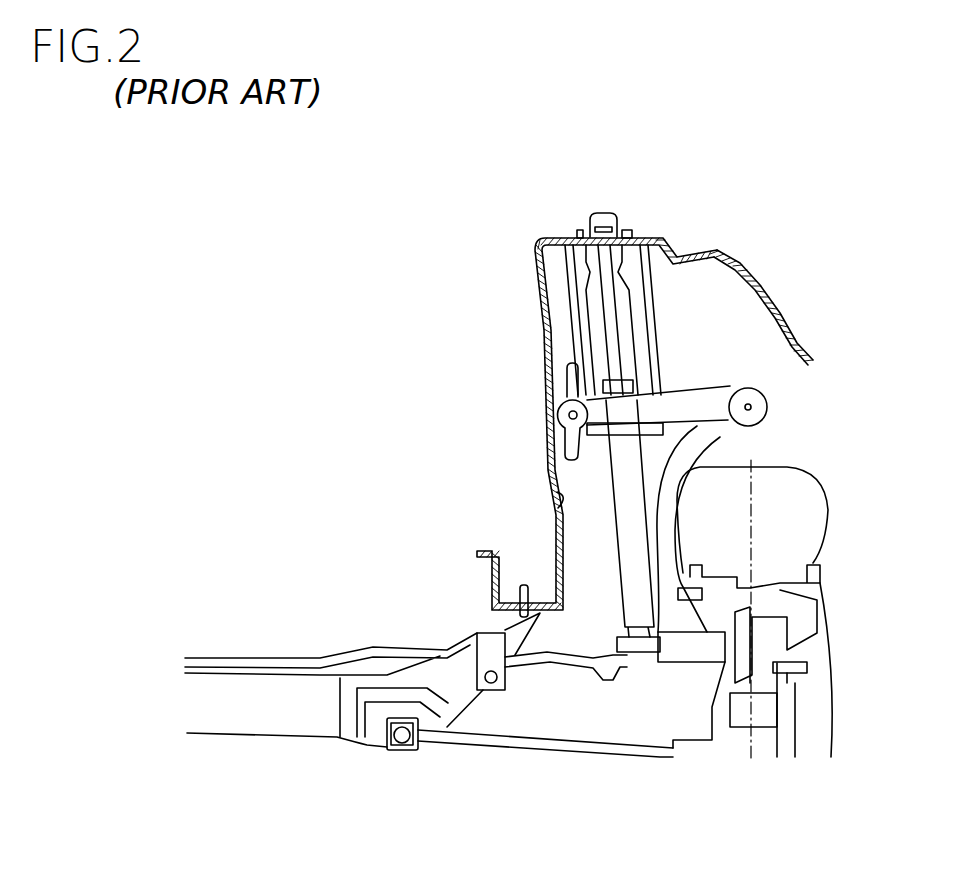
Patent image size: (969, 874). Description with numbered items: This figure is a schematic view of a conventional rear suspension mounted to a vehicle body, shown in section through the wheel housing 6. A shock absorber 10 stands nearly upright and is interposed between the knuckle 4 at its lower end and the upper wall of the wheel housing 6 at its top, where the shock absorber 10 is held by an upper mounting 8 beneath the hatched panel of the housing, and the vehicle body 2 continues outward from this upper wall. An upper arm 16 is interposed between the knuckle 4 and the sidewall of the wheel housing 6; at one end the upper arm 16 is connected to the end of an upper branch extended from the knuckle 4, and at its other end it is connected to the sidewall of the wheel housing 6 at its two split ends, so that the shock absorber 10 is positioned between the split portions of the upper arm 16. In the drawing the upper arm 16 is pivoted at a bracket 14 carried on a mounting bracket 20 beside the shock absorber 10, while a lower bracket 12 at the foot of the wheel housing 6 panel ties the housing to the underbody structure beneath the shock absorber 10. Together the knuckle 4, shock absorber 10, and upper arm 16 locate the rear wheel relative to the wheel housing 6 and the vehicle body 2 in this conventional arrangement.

The vehicle body 2 is at (723, 290).
The knuckle 4 is at (715, 430).
The wheel housing 6 is at (540, 288).
The upper mount 8 is at (645, 230).
The shock absorber 10 is at (617, 468).
The lower bracket 12 is at (557, 517).
The link bracket 14 is at (562, 426).
The upper arm 16 is at (702, 388).
The bracket 20 is at (577, 395).